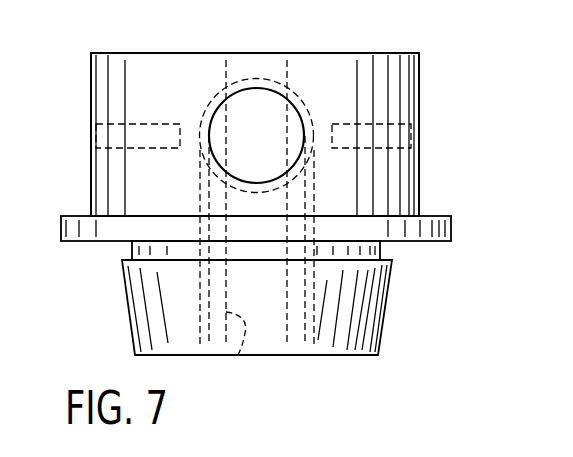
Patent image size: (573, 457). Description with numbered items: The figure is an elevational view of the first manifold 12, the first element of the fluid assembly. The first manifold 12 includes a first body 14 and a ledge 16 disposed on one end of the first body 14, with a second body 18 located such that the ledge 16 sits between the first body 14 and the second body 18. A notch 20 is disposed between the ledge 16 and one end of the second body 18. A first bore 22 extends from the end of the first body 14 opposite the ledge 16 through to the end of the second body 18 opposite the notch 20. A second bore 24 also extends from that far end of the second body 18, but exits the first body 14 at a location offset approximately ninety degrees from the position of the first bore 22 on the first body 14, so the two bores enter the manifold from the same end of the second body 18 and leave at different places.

The first manifold 12 is at (86, 148).
The first body 14 is at (420, 92).
The ledge 16 is at (452, 228).
The second body 18 is at (352, 356).
The notch 20 is at (380, 250).
The first bore 22 is at (238, 355).
The second bore 24 is at (212, 99).